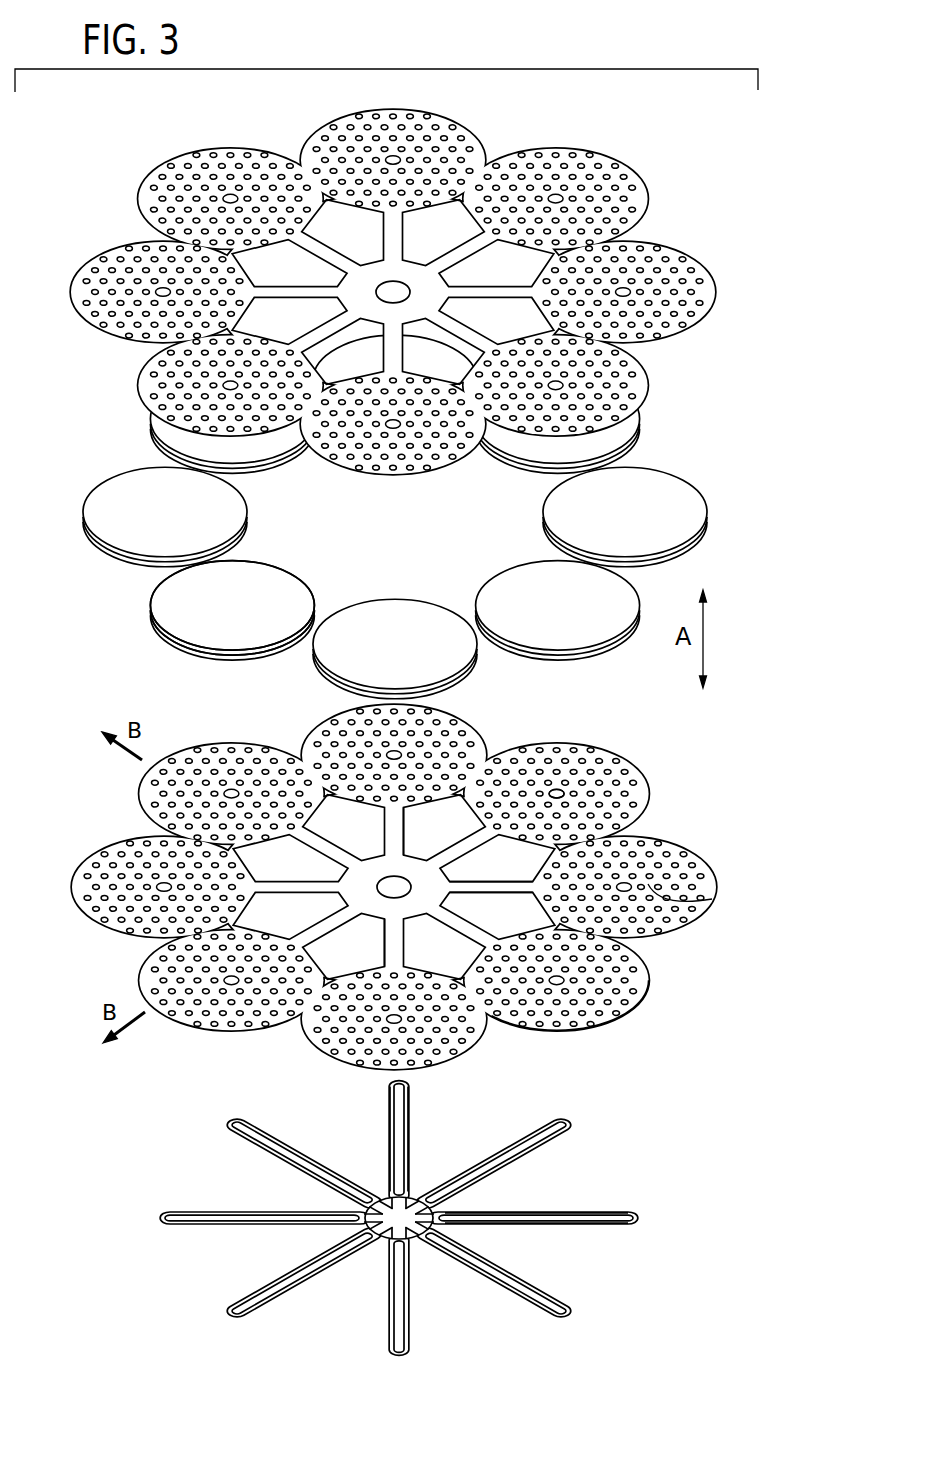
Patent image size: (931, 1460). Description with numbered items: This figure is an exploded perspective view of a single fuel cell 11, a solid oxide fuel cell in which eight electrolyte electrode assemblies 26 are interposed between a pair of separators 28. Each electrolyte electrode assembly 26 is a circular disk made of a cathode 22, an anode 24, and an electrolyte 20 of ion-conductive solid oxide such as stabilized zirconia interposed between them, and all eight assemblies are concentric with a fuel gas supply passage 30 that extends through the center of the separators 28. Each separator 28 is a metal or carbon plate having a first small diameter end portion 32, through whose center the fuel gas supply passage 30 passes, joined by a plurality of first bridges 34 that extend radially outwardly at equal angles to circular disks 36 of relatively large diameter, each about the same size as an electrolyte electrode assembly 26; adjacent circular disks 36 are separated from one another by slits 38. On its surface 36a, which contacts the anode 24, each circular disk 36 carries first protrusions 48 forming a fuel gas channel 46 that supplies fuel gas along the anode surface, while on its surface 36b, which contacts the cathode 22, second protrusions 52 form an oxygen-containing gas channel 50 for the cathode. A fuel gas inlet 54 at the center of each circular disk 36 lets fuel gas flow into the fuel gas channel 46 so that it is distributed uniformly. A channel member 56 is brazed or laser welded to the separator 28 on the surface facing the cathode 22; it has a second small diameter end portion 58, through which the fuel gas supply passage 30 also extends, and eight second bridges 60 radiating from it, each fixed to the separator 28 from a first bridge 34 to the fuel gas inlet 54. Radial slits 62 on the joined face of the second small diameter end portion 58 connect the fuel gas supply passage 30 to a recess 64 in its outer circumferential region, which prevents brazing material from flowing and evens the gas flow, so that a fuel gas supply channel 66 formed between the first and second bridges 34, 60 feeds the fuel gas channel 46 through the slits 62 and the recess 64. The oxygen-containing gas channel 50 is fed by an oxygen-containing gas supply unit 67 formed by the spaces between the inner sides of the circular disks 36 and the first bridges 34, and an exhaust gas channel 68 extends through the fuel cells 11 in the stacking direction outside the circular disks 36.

The fuel cell 11 is at (600, 114).
The electrolyte 20 is at (158, 626).
The cathode 22 is at (183, 605).
The anode 24 is at (187, 630).
The electrolyte electrode assembly 26 is at (286, 552).
The separator 28 is at (673, 137).
The fuel gas supply passage 30 is at (391, 881).
The first small diameter end portion 32 is at (447, 871).
The first bridge 34 is at (404, 822).
The circular disk 36 is at (457, 712).
The surface of circular disk contacting the anode 36a is at (648, 980).
The surface of circular disk contacting the cathode 36b is at (550, 1025).
The slit 38 is at (125, 842).
The fuel gas channel 46 is at (712, 900).
The first protrusion 48 is at (620, 834).
The oxygen-containing gas channel 50 is at (590, 1008).
The second protrusion 52 is at (716, 868).
The fuel gas inlet 54 is at (558, 789).
The channel member 56 is at (566, 1098).
The second small diameter end portion 58 is at (415, 1185).
The second bridge 60 is at (552, 1208).
The slit 62 is at (447, 1205).
The recess 64 is at (377, 1240).
The fuel gas supply channel 66 is at (238, 1215).
The oxygen-containing gas supply unit 67 is at (338, 946).
The exhaust gas channel 68 is at (157, 1018).